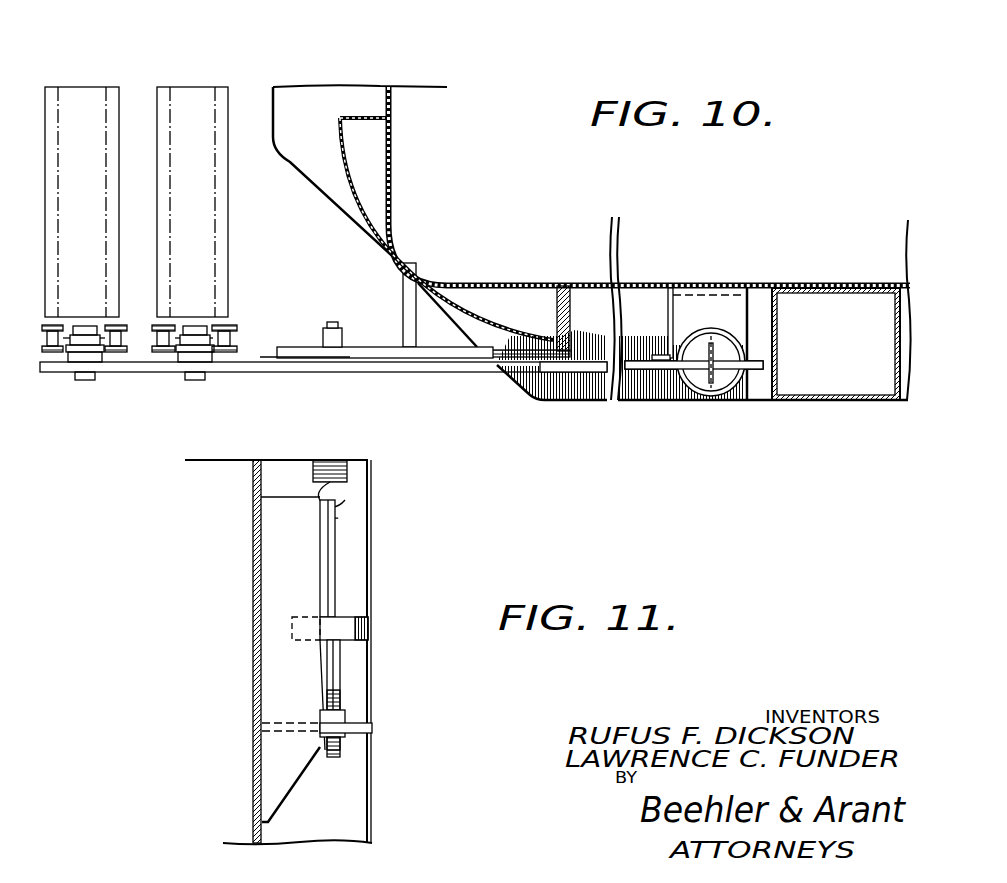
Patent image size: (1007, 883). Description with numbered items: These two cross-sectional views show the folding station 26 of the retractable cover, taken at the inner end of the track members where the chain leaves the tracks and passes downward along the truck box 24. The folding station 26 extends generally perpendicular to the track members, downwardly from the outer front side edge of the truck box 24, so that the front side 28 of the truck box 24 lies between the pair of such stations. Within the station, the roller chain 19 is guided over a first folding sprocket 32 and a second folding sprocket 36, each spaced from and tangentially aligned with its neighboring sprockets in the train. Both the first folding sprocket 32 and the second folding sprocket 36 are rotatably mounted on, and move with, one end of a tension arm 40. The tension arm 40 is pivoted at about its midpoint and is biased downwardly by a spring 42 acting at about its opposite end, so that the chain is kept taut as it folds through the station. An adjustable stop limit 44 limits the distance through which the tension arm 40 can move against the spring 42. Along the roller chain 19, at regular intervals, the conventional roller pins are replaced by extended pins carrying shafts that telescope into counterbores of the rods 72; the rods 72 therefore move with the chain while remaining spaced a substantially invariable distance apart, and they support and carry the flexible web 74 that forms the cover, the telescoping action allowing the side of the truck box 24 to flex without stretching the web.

In FIG. 10, the roller chain 19 is at (242, 326).
In FIG. 10, the truck box 24 is at (836, 410).
In FIG. 10, the folding station 26 is at (139, 85).
In FIG. 10, the front side 28 is at (393, 129).
In FIG. 10, the first folding sprocket 32 is at (190, 342).
In FIG. 10, the second folding sprocket 36 is at (88, 342).
In FIG. 10, the tension arm 40 is at (452, 368).
In FIG. 11, the tension arm 40 is at (335, 537).
In FIG. 10, the spring 42 is at (708, 382).
In FIG. 11, the spring 42 is at (348, 471).
In FIG. 10, the adjustable stop limit 44 is at (717, 400).
In FIG. 11, the adjustable stop limit 44 is at (342, 683).
In FIG. 10, the rod 72 is at (228, 321).
In FIG. 10, the flexible web 74 is at (198, 231).